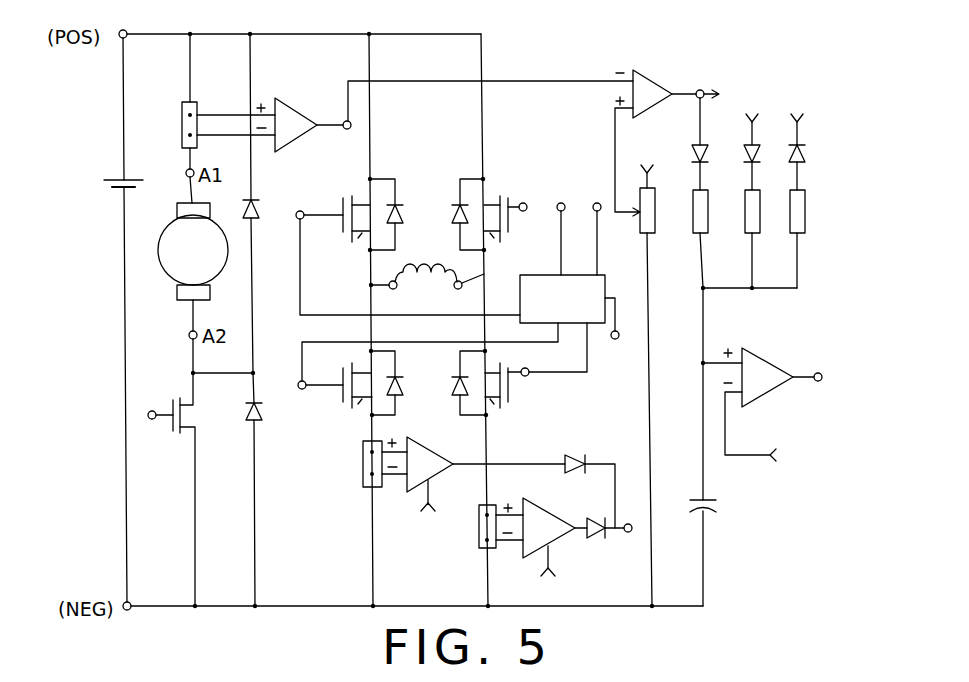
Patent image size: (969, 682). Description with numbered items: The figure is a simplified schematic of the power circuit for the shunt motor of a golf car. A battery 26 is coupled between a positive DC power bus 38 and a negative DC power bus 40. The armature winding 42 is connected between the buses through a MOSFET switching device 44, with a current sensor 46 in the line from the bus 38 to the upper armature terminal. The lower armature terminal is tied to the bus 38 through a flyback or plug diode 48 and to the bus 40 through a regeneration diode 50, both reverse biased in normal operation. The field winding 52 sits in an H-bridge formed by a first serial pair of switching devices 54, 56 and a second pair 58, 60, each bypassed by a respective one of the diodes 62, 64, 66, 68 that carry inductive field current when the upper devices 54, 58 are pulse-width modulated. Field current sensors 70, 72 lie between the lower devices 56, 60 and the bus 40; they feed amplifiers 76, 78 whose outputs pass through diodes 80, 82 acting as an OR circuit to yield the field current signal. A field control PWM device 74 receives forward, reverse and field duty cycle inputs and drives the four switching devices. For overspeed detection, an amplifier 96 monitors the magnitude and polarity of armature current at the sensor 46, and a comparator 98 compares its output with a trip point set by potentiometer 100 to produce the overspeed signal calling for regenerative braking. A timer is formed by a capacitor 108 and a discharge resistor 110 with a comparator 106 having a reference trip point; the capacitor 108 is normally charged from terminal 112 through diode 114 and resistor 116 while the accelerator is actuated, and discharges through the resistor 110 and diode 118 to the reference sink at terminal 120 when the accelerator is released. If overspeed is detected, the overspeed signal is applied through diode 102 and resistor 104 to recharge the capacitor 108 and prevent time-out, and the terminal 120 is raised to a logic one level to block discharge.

The battery 26 is at (114, 178).
The positive DC power bus 38 is at (228, 33).
The negative DC power bus 40 is at (316, 606).
The armature winding 42 is at (163, 233).
The switching device 44 is at (186, 401).
The current sensor 46 is at (179, 105).
The flyback diode 48 is at (258, 203).
The regeneration diode 50 is at (262, 406).
The field winding 52 is at (447, 264).
The switching device 54 is at (352, 245).
The switching device 56 is at (359, 400).
The switching device 58 is at (478, 178).
The switching device 60 is at (491, 399).
The diode 62 is at (404, 203).
The diode 64 is at (425, 370).
The diode 66 is at (456, 203).
The diode 68 is at (454, 388).
The field current sensor 70 is at (362, 475).
The field current sensor 72 is at (478, 536).
The field control PWM device 74 is at (604, 278).
The amplifier 76 is at (437, 455).
The amplifier 78 is at (548, 510).
The diode 80 is at (575, 455).
The diode 82 is at (598, 517).
The amplifier 96 is at (289, 104).
The comparator 98 is at (650, 77).
The potentiometer 100 is at (656, 222).
The diode 102 is at (709, 153).
The resistor 104 is at (708, 217).
The comparator 106 is at (773, 391).
The capacitor 108 is at (720, 506).
The discharge resistor 110 is at (805, 220).
The terminal 112 is at (752, 112).
The diode 114 is at (761, 153).
The resistor 116 is at (760, 217).
The diode 118 is at (806, 153).
The terminal 120 is at (797, 112).